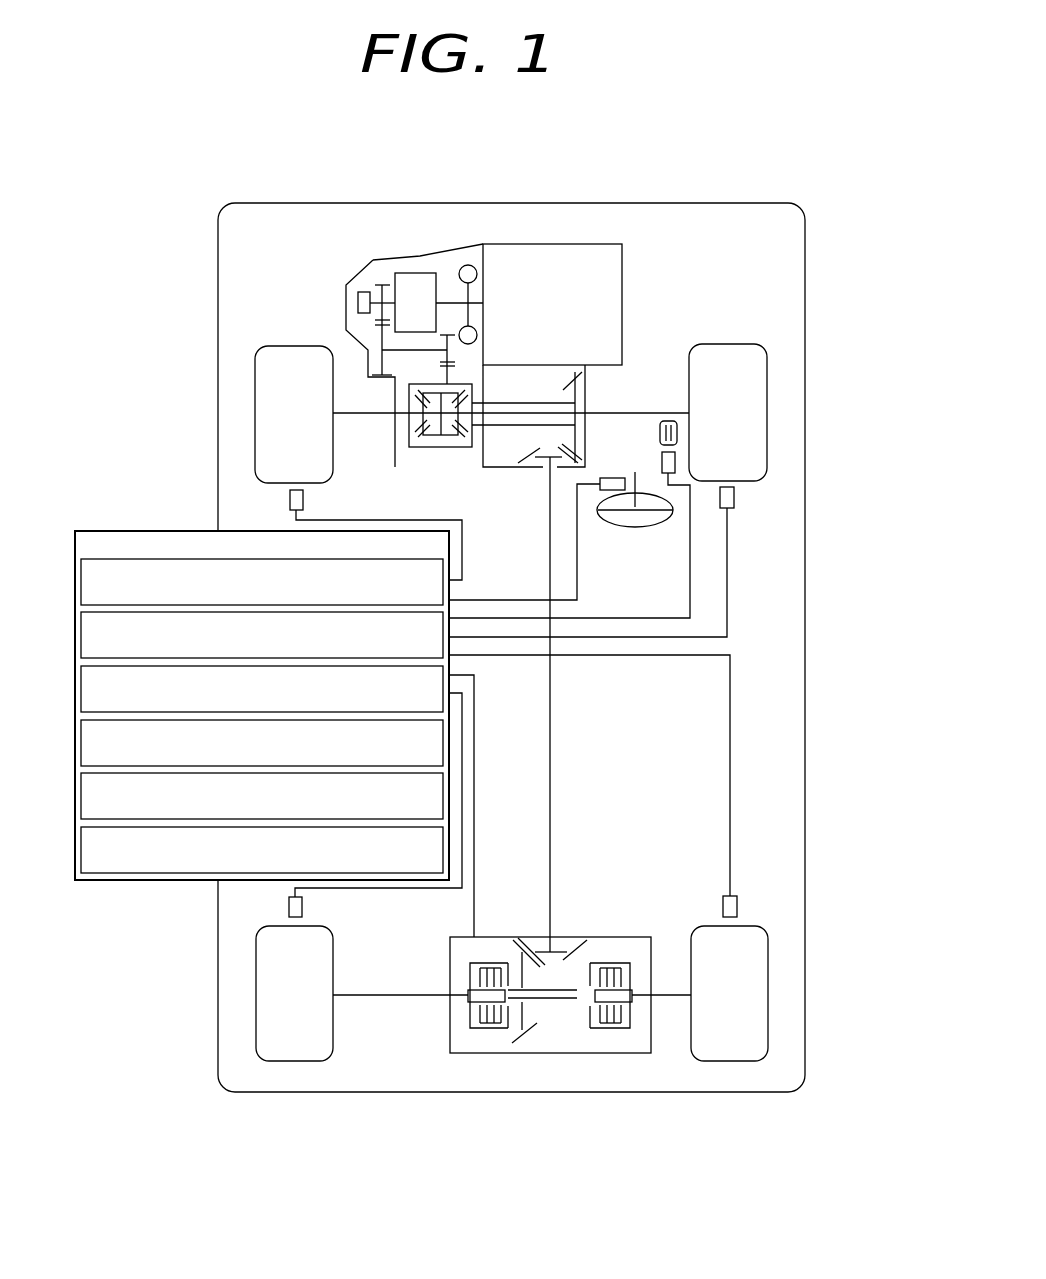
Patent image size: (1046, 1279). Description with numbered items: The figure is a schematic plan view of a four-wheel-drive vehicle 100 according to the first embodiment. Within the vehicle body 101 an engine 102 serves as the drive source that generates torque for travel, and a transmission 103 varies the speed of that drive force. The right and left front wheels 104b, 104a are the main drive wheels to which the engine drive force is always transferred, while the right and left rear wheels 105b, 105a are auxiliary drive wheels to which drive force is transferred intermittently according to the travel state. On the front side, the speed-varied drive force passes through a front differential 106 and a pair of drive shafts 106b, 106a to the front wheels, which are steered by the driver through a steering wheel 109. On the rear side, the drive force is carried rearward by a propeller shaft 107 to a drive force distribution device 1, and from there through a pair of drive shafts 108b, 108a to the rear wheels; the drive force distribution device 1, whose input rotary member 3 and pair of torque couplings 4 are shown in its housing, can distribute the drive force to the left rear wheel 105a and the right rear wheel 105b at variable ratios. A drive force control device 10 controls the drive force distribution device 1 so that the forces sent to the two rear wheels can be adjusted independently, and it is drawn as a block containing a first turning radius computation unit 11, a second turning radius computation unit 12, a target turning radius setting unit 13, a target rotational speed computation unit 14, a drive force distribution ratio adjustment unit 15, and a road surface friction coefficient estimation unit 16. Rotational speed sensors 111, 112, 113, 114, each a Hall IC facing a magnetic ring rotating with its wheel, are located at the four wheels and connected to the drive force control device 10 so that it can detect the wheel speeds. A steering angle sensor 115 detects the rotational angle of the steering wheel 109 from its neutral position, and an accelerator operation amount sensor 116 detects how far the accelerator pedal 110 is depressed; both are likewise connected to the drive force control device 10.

The drive force distribution device 1 is at (547, 1034).
The input rotary member 3 is at (558, 1033).
The torque couplings 4 is at (478, 1032).
The drive force control device 10 is at (113, 527).
The first turning radius computation unit 11 is at (80, 584).
The second turning radius computation unit 12 is at (80, 637).
The target turning radius setting unit 13 is at (80, 691).
The target rotational speed computation unit 14 is at (80, 745).
The drive force distribution ratio adjustment unit 15 is at (80, 798).
The road surface friction coefficient estimation unit 16 is at (80, 852).
The four-wheel-drive vehicle 100 is at (253, 180).
The vehicle body 101 is at (692, 200).
The engine 102 is at (575, 242).
The transmission 103 is at (435, 267).
The left front wheel 104a is at (255, 397).
The right front wheel 104b is at (767, 392).
The left rear wheel 105a is at (256, 993).
The right rear wheel 105b is at (768, 978).
The front differential 106 is at (425, 453).
The drive shaft 106a is at (370, 417).
The drive shaft 106b is at (643, 412).
The propeller shaft 107 is at (553, 868).
The drive shaft 108a is at (382, 992).
The drive shaft 108b is at (676, 992).
The steering wheel 109 is at (635, 530).
The accelerator pedal 110 is at (677, 432).
The rotational speed sensor 111 is at (288, 500).
The rotational speed sensor 112 is at (735, 497).
The rotational speed sensor 113 is at (288, 905).
The rotational speed sensor 114 is at (737, 907).
The steering angle sensor 115 is at (612, 478).
The accelerator operation amount sensor 116 is at (675, 463).